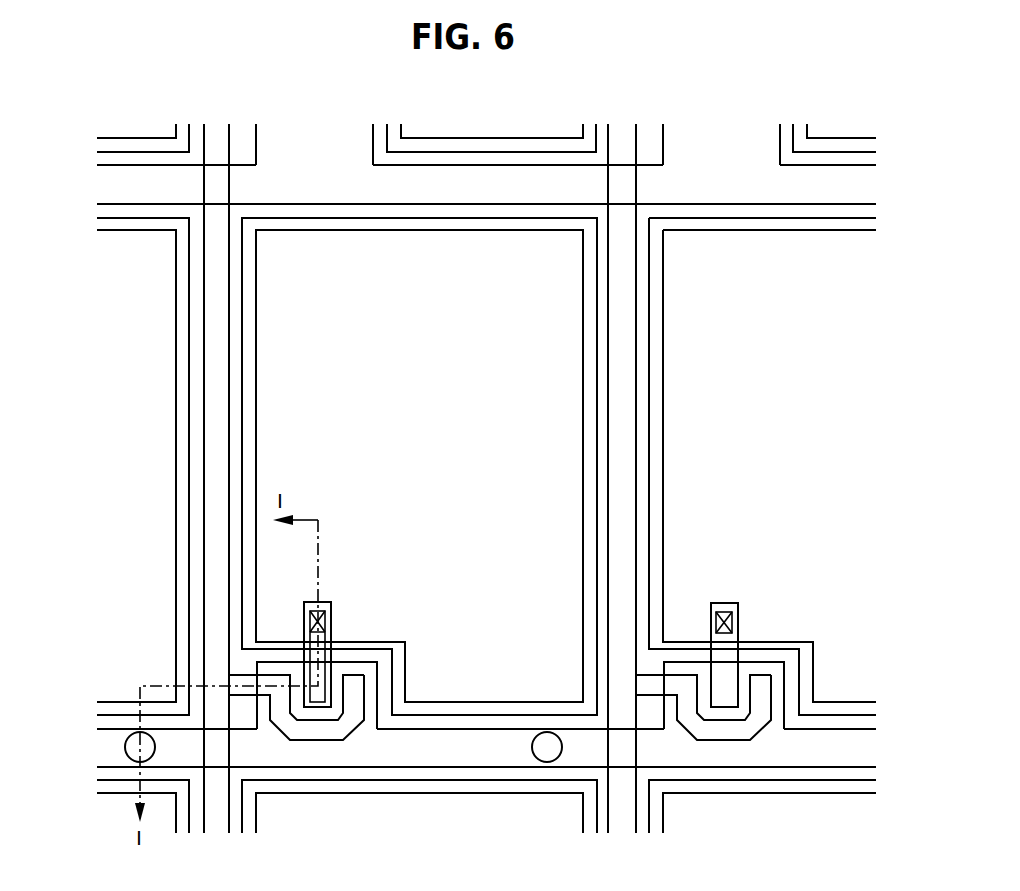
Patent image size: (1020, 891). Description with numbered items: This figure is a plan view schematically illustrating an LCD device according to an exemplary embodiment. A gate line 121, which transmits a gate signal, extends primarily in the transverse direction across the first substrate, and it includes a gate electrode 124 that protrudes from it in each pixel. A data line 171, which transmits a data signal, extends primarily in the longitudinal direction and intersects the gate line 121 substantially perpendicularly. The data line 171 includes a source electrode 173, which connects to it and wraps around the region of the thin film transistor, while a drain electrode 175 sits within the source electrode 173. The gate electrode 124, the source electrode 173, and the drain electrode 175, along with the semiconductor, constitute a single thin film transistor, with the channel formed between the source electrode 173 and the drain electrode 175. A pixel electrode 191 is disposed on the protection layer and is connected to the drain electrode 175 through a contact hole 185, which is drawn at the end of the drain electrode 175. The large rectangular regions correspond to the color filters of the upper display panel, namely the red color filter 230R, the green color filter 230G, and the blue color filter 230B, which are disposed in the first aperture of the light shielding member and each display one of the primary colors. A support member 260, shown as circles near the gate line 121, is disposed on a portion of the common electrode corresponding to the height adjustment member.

The gate line 121 is at (507, 729).
The gate electrode 124 is at (377, 695).
The data line 171 is at (229, 303).
The source electrode 173 is at (317, 742).
The drain electrode 175 is at (304, 628).
The contact hole 185 is at (304, 622).
The pixel electrode 191 is at (243, 497).
The red color filter 230R is at (158, 351).
The green color filter 230G is at (445, 351).
The blue color filter 230B is at (794, 351).
The support member 260 is at (125, 746).